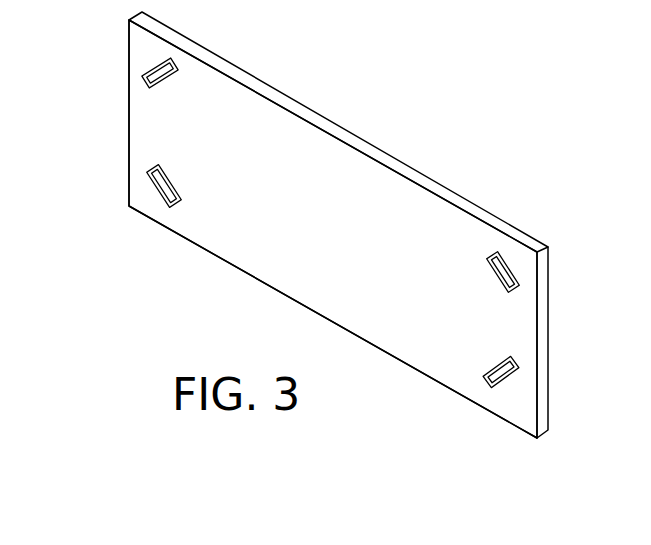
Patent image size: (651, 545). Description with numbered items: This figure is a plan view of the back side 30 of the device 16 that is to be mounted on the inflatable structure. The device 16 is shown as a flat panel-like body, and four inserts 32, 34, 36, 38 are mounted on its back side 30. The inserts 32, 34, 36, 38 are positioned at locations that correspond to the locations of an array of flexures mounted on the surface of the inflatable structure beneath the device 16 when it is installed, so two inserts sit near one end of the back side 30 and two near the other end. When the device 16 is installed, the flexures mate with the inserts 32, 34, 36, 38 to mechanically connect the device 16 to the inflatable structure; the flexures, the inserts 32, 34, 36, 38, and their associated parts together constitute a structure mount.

The device 16 is at (348, 130).
The back side 30 is at (235, 228).
The insert 32 is at (494, 253).
The insert 34 is at (146, 75).
The insert 36 is at (157, 189).
The insert 38 is at (508, 387).